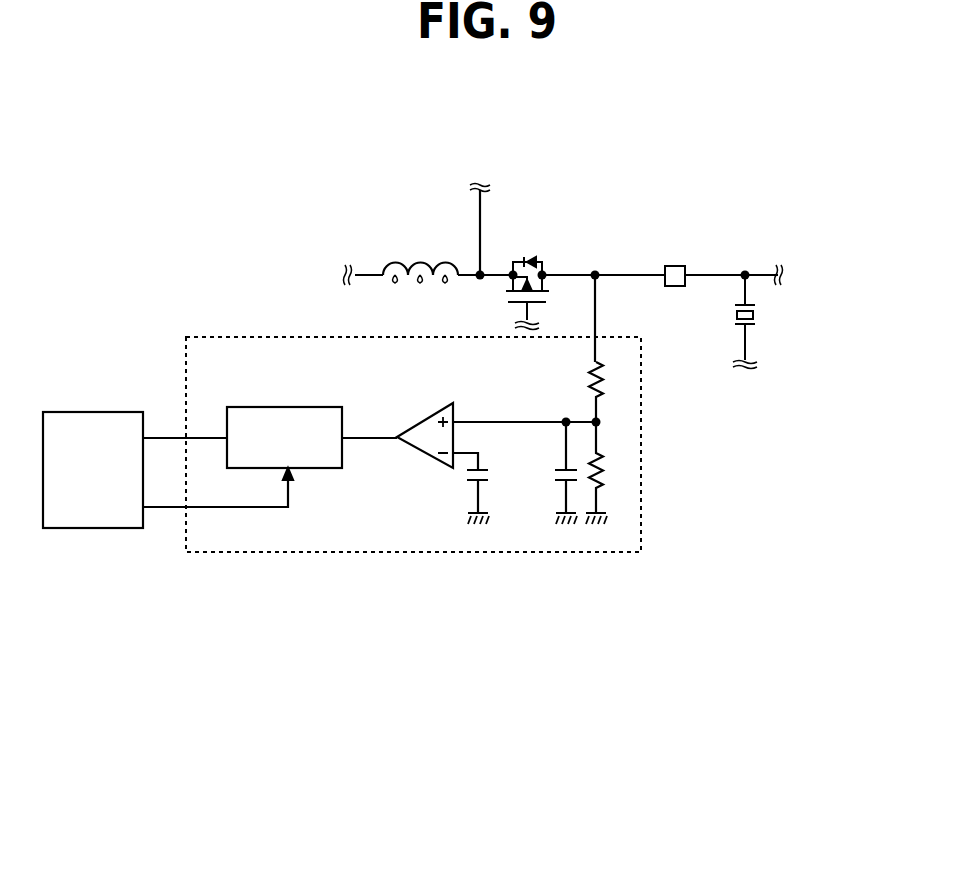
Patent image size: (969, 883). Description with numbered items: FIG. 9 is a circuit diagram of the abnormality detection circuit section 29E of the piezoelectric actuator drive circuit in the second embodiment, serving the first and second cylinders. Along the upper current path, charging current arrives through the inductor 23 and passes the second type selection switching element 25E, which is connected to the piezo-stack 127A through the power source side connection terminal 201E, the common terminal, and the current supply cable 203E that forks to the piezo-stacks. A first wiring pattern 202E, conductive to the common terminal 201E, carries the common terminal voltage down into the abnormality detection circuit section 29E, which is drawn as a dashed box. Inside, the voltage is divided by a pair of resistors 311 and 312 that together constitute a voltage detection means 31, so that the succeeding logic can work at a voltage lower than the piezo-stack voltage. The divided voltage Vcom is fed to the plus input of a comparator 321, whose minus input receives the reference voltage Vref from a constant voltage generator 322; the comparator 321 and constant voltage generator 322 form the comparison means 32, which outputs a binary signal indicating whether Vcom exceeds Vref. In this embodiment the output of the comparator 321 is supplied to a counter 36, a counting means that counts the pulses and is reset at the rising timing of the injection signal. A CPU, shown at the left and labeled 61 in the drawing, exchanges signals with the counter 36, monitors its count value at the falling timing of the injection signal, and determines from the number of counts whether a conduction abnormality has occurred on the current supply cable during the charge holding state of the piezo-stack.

The inductor 23 is at (424, 262).
The second type selection switching element 25E is at (527, 257).
The first wiring pattern 202E is at (597, 312).
The power source side connection terminal 201E is at (675, 266).
The current supply cable 203E is at (723, 275).
The piezo-stack 127A is at (757, 313).
The abnormality detection circuit section 29E is at (212, 337).
The counter 36 is at (288, 407).
The CPU 61 is at (90, 528).
The voltage detection means 31 is at (711, 443).
The resistor 311 is at (598, 385).
The resistor 312 is at (600, 482).
The comparison means 32 is at (472, 571).
The comparator 321 is at (427, 457).
The constant voltage generator 322 is at (485, 482).